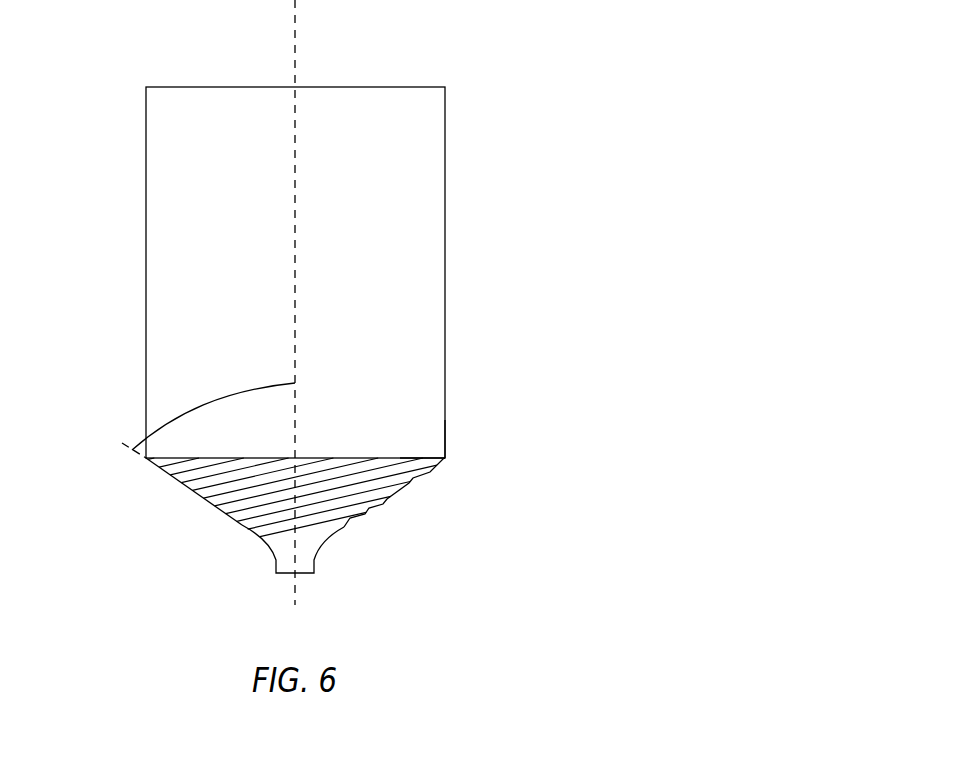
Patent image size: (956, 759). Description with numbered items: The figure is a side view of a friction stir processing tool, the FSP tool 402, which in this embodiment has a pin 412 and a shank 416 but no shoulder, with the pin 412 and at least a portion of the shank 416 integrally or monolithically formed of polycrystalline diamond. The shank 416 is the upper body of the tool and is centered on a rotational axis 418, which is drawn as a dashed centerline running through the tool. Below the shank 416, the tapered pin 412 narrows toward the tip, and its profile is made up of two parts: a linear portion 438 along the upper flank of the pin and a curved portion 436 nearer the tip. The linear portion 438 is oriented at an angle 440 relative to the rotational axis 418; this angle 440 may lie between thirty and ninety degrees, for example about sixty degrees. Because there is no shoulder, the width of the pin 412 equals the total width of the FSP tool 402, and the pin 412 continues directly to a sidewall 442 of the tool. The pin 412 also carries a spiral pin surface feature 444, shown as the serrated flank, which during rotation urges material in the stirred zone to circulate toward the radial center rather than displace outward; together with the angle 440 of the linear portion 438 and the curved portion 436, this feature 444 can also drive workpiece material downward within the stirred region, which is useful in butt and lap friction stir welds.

The FSP tool 402 is at (540, 187).
The pin 412 is at (372, 512).
The shank 416 is at (427, 258).
The rotational axis 418 is at (295, 72).
The curved portion 436 is at (245, 548).
The linear portion 438 is at (158, 502).
The angle 440 is at (207, 400).
The sidewall 442 is at (447, 457).
The pin surface feature 444 is at (412, 483).